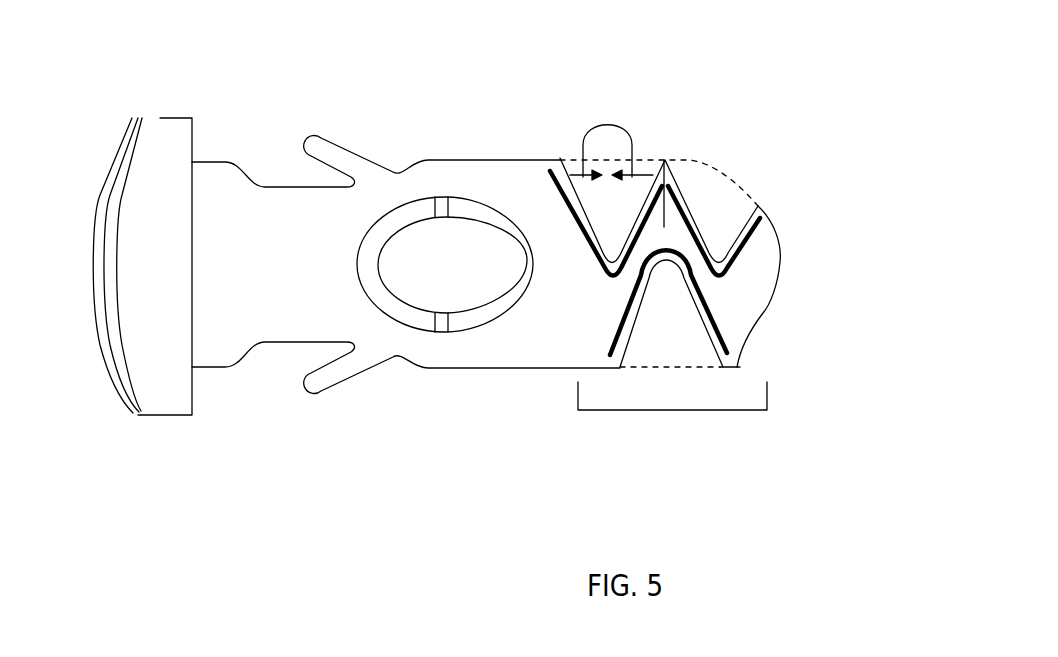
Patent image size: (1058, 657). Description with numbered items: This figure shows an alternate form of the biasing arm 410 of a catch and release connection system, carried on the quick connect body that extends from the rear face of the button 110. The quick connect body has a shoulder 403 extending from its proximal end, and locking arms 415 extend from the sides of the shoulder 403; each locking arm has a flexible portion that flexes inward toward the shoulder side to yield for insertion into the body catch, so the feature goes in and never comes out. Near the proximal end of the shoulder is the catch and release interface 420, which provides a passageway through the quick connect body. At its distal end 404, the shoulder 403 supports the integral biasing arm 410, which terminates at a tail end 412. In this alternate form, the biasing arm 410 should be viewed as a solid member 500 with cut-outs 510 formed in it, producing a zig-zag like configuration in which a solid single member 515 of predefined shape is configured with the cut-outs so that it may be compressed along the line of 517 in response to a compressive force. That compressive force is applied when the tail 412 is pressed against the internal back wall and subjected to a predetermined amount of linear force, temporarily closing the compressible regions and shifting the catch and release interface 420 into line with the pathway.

The button 110 is at (90, 343).
The shoulder 403 is at (192, 252).
The distal end of the shoulder 404 is at (558, 263).
The biasing arm 410 is at (685, 417).
The tail end 412 is at (780, 257).
The locking arms 415 is at (324, 390).
The catch and release interface 420 is at (463, 336).
The solid member 500 is at (705, 170).
The cut-outs 510 is at (556, 216).
The solid single member 515 is at (664, 160).
The line of compression 517 is at (605, 123).